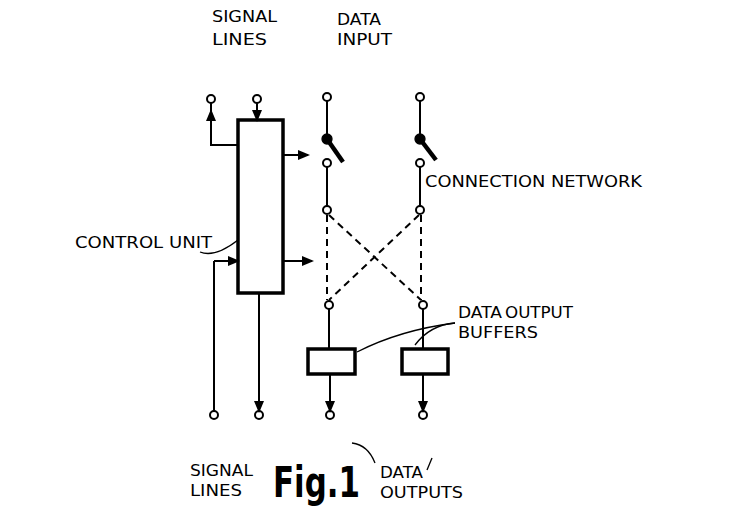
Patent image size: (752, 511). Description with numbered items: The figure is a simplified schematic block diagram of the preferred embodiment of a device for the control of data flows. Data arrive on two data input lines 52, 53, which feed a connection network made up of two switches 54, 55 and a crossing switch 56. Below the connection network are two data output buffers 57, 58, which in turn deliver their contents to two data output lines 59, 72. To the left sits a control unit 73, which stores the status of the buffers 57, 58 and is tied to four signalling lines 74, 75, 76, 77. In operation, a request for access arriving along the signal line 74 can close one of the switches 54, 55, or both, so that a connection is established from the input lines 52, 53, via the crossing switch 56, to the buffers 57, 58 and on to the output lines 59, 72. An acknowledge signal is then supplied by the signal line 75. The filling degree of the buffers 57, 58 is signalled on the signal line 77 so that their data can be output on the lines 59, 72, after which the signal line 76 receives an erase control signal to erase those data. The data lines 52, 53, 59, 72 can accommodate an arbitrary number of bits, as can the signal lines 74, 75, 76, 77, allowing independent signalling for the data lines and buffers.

The data input line 52 is at (327, 93).
The data input line 53 is at (420, 93).
The switch 54 is at (332, 140).
The switch 55 is at (425, 140).
The crossing switch 56 is at (374, 256).
The data output buffer 57 is at (333, 363).
The data output buffer 58 is at (427, 363).
The data output line 59 is at (331, 419).
The data output line 72 is at (424, 419).
The control unit 73 is at (253, 200).
The signal line 74 is at (257, 95).
The signal line 75 is at (211, 95).
The signal line 76 is at (215, 419).
The signal line 77 is at (260, 419).